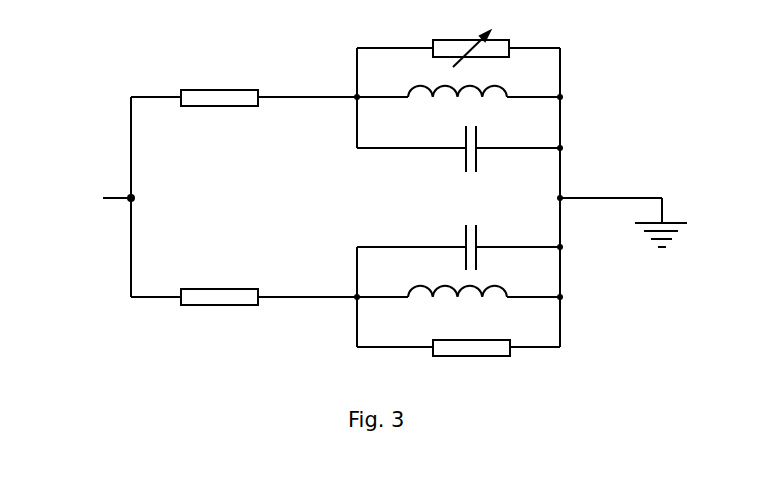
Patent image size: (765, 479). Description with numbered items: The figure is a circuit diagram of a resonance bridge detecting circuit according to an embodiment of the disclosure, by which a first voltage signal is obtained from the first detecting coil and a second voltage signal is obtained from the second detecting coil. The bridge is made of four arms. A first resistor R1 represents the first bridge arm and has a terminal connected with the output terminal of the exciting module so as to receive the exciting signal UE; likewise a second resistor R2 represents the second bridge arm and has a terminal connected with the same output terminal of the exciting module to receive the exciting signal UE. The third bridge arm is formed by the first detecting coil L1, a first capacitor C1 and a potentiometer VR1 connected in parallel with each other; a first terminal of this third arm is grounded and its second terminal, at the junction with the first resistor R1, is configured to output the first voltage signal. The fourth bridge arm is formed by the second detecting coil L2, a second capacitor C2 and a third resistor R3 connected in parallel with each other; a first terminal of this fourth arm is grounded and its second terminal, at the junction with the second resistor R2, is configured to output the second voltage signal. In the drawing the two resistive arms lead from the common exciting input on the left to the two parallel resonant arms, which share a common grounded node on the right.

The exciting signal UE is at (95, 199).
The first resistor R1 is at (219, 84).
The second resistor R2 is at (219, 284).
The third resistor R3 is at (451, 339).
The potentiometer VR1 is at (458, 40).
The first detecting coil L1 is at (457, 80).
The second detecting coil L2 is at (457, 280).
The first capacitor C1 is at (440, 149).
The second capacitor C2 is at (440, 247).